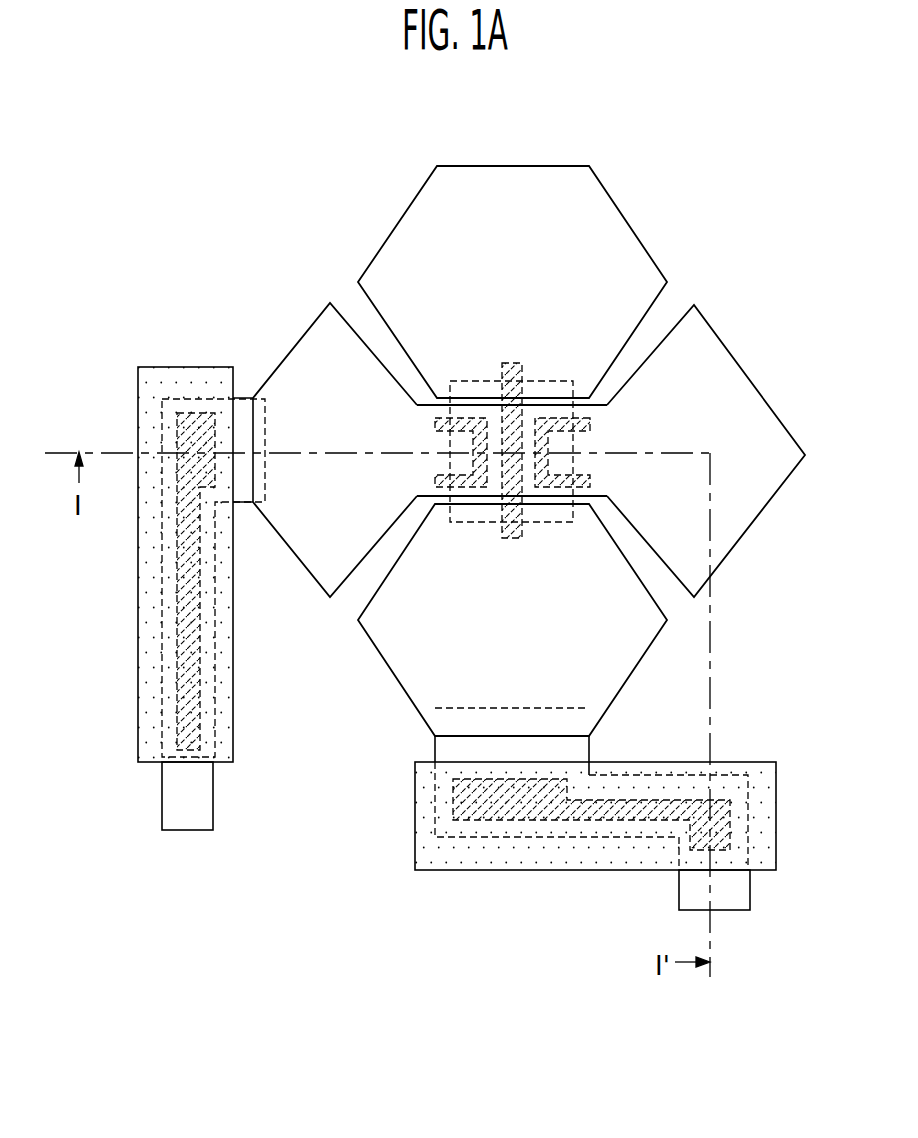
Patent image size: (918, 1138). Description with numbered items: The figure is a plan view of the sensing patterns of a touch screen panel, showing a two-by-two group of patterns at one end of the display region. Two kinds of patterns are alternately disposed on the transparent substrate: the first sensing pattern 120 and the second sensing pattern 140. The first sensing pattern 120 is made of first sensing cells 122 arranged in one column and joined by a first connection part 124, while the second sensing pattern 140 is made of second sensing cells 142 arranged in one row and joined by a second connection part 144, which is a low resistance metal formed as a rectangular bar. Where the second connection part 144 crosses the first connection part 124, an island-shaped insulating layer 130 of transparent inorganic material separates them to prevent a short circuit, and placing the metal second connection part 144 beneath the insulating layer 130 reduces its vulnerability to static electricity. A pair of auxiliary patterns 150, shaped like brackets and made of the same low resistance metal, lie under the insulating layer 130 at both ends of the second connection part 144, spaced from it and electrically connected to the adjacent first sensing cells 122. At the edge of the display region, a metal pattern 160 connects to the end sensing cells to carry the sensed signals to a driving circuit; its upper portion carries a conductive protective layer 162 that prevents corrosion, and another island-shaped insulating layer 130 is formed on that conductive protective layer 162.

The first sensing pattern 120 is at (516, 404).
The first sensing cell 122 is at (292, 377).
The first connection part 124 is at (535, 412).
The insulating layer 130 is at (452, 522).
The second sensing pattern 140 is at (553, 468).
The second sensing cell 142 is at (560, 193).
The second connection part 144 is at (506, 364).
The auxiliary pattern 150 is at (435, 423).
The metal pattern 160 is at (188, 707).
The conductive protective layer 162 is at (203, 817).